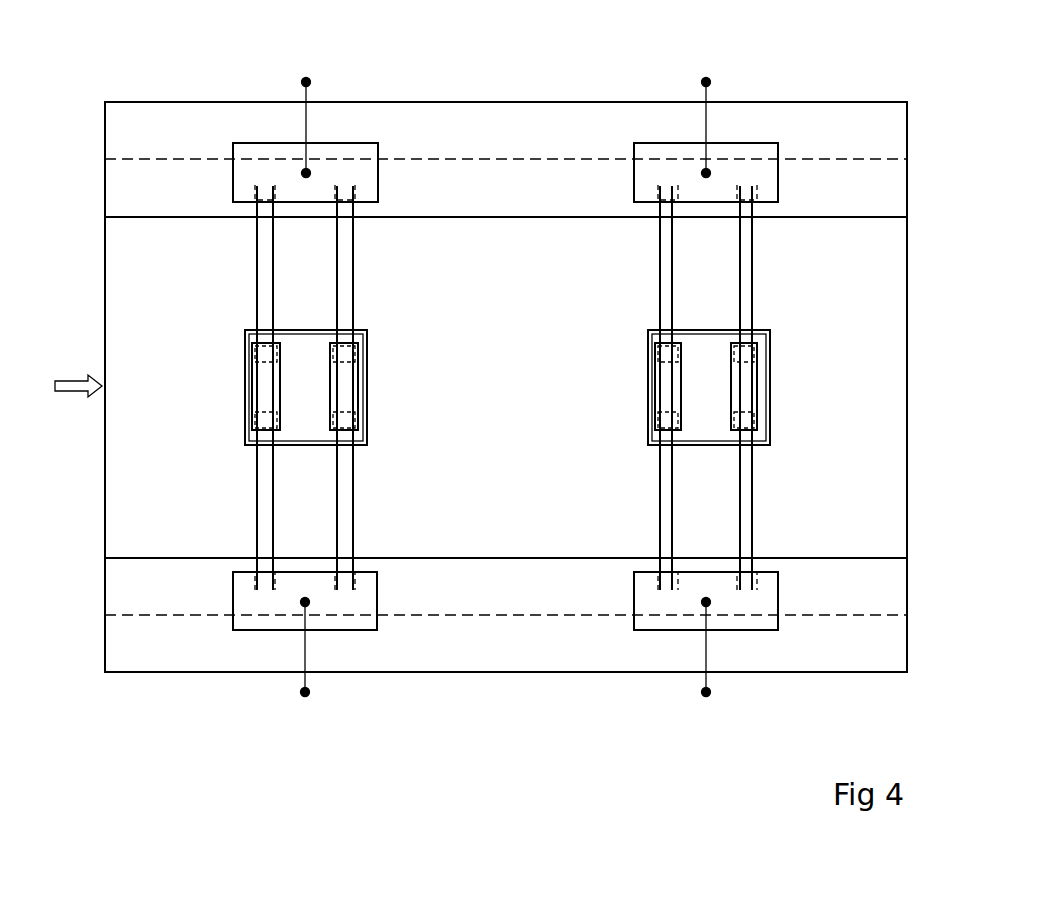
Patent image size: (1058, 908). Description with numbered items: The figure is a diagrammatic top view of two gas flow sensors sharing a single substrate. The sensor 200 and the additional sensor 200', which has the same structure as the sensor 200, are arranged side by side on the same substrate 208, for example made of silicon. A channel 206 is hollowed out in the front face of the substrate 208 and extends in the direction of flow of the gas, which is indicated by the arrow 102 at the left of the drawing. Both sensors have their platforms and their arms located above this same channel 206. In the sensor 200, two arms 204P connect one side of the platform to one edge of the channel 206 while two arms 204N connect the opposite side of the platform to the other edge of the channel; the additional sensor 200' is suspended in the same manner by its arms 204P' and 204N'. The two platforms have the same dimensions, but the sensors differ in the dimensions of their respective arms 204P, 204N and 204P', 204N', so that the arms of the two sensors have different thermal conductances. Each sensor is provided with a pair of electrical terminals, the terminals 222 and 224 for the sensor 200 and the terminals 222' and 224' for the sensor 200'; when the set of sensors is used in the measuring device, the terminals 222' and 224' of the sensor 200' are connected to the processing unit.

The heat flow direction arrow 102 is at (77, 393).
The sensor 200 is at (661, 374).
The additional sensor 200' is at (256, 372).
The arms 204P is at (706, 265).
The arms 204P' is at (308, 265).
The arms 204N is at (705, 509).
The arms 204N' is at (308, 509).
The channel 206 is at (888, 446).
The substrate 208 is at (105, 510).
The terminal 222 is at (706, 105).
The terminal 222' is at (305, 105).
The terminal 224 is at (712, 658).
The terminal 224' is at (314, 658).